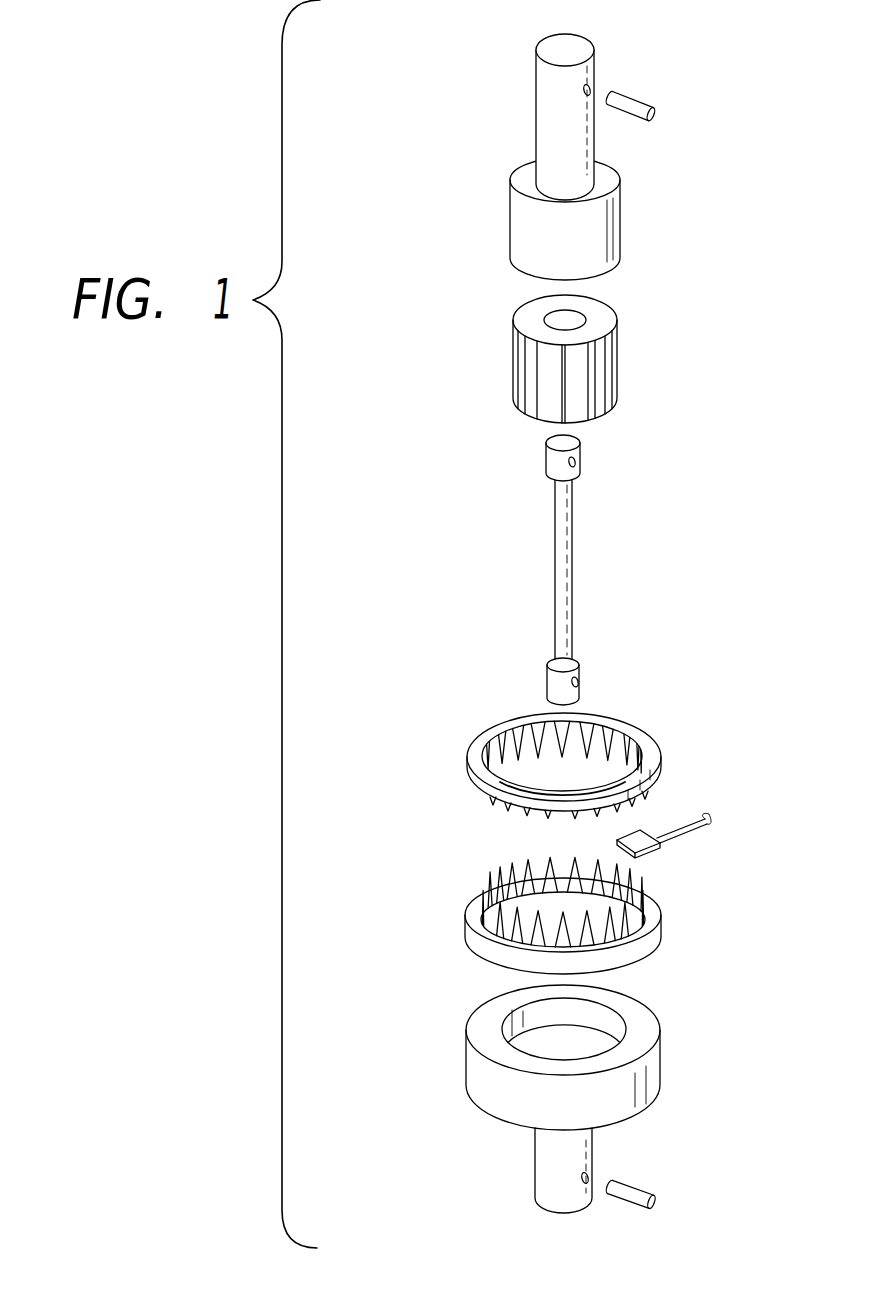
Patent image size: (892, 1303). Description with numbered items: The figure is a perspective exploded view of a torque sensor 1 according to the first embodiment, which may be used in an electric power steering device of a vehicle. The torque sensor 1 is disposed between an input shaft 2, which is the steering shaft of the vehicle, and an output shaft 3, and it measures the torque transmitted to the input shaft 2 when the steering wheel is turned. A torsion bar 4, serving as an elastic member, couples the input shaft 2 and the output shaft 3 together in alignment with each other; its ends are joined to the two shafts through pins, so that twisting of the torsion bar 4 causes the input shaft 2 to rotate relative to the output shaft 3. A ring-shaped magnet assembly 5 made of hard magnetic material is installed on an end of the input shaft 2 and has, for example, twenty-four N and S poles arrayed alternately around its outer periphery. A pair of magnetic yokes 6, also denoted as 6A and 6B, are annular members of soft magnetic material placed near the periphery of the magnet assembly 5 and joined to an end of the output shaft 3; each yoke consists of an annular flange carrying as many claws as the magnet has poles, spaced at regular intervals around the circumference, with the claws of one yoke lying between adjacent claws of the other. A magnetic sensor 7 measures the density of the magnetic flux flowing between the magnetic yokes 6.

The torque sensor 1 is at (474, 105).
The input shaft 2 is at (577, 46).
The output shaft 3 is at (647, 1085).
The torsion bar 4 is at (563, 520).
The magnet assembly 5 is at (600, 370).
The magnetic yokes 6 is at (569, 834).
The magnetic yoke 6A is at (623, 728).
The magnetic yoke 6B is at (638, 943).
The magnetic sensor 7 is at (647, 852).